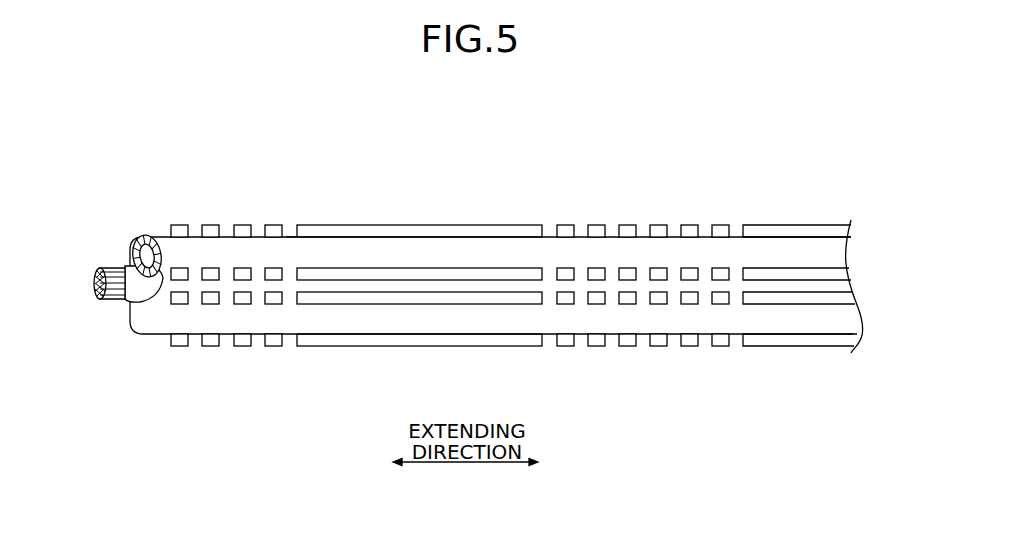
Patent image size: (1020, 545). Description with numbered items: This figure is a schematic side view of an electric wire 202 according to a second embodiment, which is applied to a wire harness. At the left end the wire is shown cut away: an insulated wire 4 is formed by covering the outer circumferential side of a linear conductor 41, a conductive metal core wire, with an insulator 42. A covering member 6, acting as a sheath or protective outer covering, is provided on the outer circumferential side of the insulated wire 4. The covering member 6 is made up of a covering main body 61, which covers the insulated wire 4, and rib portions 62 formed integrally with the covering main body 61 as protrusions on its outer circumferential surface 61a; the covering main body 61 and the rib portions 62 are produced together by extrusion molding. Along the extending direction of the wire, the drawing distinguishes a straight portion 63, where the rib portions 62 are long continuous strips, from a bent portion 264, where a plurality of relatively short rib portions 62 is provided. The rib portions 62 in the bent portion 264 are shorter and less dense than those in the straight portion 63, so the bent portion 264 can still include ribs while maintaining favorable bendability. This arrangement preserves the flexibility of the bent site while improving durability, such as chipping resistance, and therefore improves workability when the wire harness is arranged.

The insulated wire 4 is at (165, 408).
The conductor 41 is at (107, 300).
The insulator 42 is at (142, 298).
The covering member 6 is at (370, 408).
The covering main body 61 is at (290, 310).
The outer circumferential surface 61a is at (292, 224).
The rib portion 62 is at (273, 276).
The straight portion 63 is at (524, 222).
The electric wire 202 is at (333, 163).
The bent portion 264 is at (252, 406).